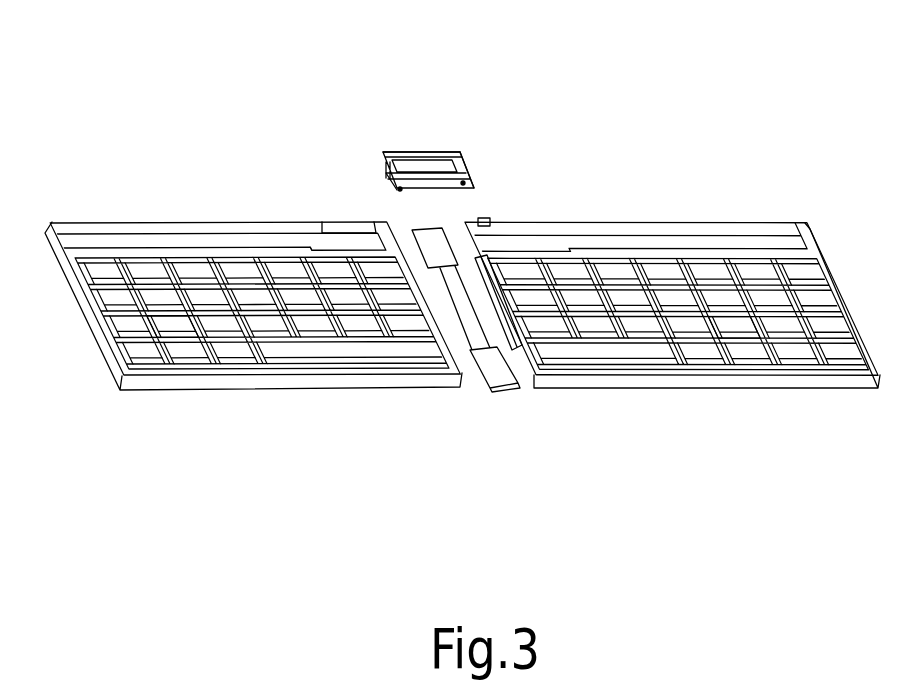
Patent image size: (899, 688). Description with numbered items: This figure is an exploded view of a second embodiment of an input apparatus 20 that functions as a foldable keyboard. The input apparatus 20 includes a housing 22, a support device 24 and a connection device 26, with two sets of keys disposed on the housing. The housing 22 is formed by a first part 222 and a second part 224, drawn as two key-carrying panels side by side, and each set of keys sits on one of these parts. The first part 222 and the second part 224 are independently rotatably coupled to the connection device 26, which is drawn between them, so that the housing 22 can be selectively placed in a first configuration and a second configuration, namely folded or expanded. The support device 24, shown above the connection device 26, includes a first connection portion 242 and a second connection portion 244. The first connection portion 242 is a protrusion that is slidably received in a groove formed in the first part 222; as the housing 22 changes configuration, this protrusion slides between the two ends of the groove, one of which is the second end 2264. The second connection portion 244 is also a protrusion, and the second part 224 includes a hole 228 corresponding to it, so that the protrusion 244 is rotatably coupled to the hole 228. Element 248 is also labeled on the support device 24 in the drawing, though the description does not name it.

The input apparatus 20 is at (762, 97).
The housing 22 is at (553, 478).
The first part 222 is at (418, 382).
The second part 224 is at (577, 383).
The second end 2264 is at (372, 225).
The hole 228 is at (483, 221).
The support device 24 is at (435, 156).
The first connection portion 242 is at (388, 150).
The second connection portion 244 is at (464, 183).
The connector slot 248 is at (458, 150).
The connection device 26 is at (432, 247).